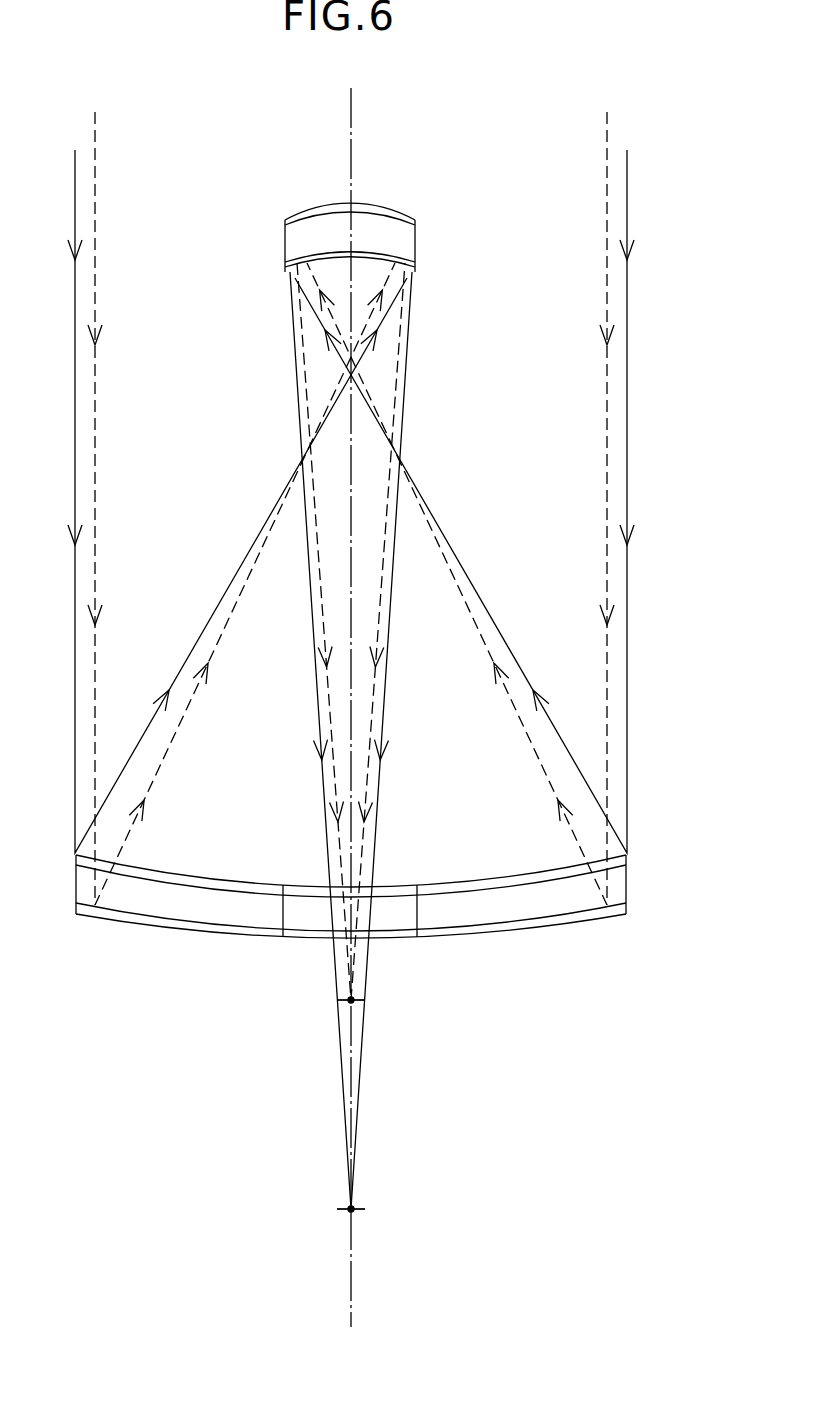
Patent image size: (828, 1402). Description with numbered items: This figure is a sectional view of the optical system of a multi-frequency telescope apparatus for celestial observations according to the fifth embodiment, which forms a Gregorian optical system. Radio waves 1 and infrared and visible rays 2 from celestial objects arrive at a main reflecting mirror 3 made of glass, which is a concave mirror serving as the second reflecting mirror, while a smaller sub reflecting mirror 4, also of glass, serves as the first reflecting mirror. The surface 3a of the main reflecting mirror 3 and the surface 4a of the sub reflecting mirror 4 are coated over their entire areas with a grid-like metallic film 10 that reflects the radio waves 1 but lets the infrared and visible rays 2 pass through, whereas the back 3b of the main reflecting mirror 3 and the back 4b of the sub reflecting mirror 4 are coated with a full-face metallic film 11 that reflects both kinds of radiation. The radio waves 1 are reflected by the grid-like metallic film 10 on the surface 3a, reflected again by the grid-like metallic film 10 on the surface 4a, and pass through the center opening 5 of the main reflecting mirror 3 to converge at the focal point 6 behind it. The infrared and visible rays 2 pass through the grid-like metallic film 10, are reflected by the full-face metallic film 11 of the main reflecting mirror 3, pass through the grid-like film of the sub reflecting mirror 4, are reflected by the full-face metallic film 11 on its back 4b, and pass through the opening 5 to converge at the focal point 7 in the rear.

The radio waves 1 is at (627, 192).
The infrared and visible rays 2 is at (607, 133).
The main reflecting mirror 3 is at (385, 594).
The surface of the main reflecting mirror 3a is at (526, 883).
The back of the main reflecting mirror 3b is at (523, 918).
The sub reflecting mirror 4 is at (309, 212).
The surface of the sub reflecting mirror 4a is at (300, 266).
The back of the sub reflecting mirror 4b is at (373, 207).
The center opening 5 is at (283, 905).
The focal point of the radio waves 6 is at (353, 1205).
The focal point of the infrared and visible rays 7 is at (350, 1000).
The grid-like metallic film 10 is at (470, 886).
The full-face metallic film 11 is at (460, 940).